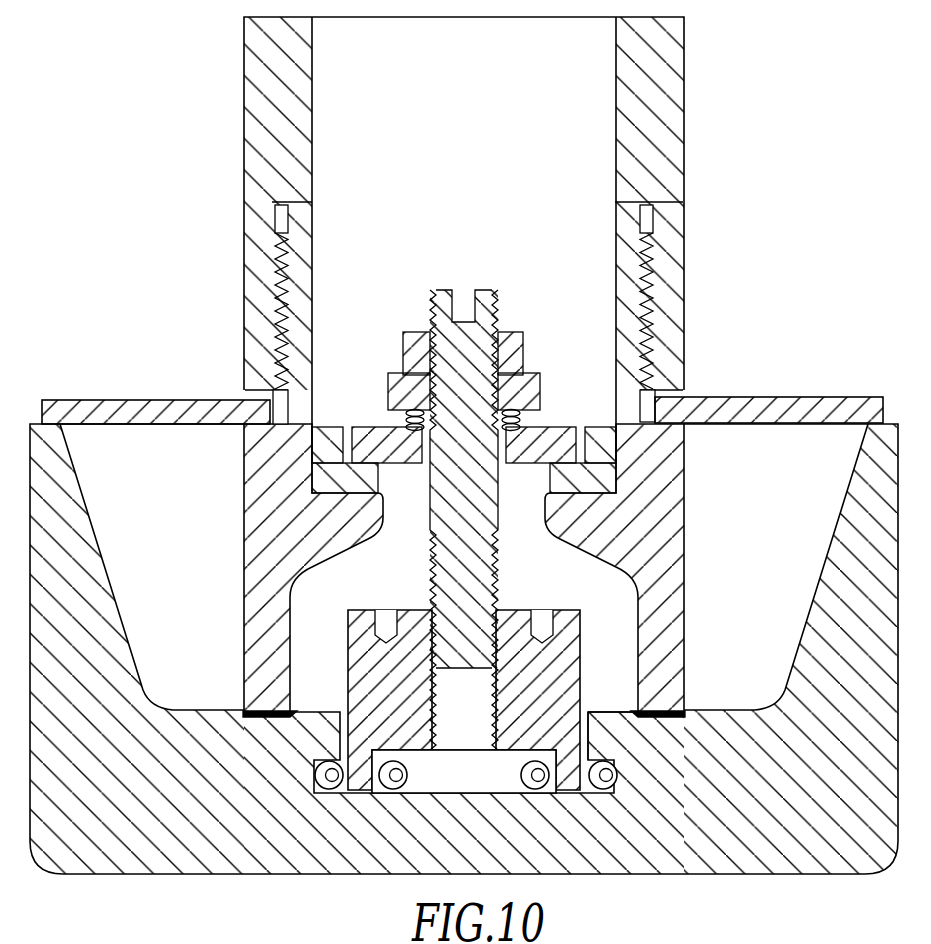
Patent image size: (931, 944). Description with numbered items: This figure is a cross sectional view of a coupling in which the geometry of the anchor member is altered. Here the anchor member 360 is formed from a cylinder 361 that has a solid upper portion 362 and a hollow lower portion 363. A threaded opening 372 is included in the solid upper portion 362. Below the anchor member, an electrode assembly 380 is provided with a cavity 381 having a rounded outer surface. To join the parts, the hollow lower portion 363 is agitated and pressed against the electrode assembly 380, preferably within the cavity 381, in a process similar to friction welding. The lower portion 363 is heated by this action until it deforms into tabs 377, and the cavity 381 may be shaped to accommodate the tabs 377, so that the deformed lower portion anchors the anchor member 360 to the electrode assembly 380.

The anchor member 360 is at (403, 602).
The cylinder 361 is at (352, 632).
The solid upper portion 362 is at (578, 654).
The hollow lower portion 363 is at (568, 752).
The threaded opening 372 is at (485, 705).
The tabs 377 is at (313, 778).
The electrode assembly 380 is at (779, 786).
The cavity 381 is at (470, 770).